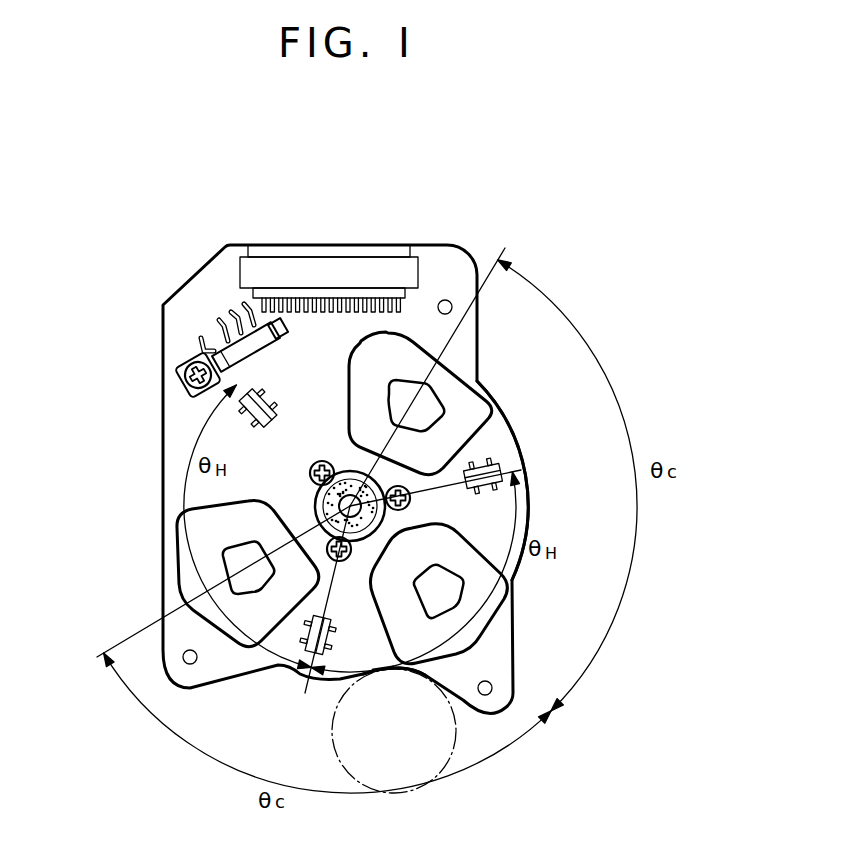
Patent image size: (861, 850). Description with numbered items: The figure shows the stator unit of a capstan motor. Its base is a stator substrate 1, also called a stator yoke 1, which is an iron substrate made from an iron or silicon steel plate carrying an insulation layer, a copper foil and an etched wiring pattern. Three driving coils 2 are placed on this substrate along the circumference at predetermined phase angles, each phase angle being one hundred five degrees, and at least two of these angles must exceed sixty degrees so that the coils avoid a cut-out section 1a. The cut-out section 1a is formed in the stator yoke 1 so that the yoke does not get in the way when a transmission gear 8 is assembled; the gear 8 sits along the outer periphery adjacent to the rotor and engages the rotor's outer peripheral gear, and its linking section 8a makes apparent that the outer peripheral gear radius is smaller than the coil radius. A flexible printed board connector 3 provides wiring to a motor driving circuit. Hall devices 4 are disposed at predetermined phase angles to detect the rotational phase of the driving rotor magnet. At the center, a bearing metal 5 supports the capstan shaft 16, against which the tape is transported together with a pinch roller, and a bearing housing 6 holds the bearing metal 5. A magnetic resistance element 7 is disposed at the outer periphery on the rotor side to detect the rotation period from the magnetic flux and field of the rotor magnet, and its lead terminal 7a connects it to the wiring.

The stator substrate (yoke) 1 is at (222, 262).
The cut-out section 1a is at (396, 668).
The driving coils 2 is at (658, 820).
The flexible printed board connector 3 is at (420, 275).
The Hall devices 4 is at (513, 440).
The bearing metal 5 is at (318, 492).
The bearing housing 6 is at (327, 457).
The magnetic resistance element (MR element) 7 is at (187, 390).
The lead terminal 7a is at (220, 330).
The transmission gear 8 is at (440, 787).
The linking section 8a is at (380, 663).
The capstan shaft 16 is at (515, 585).